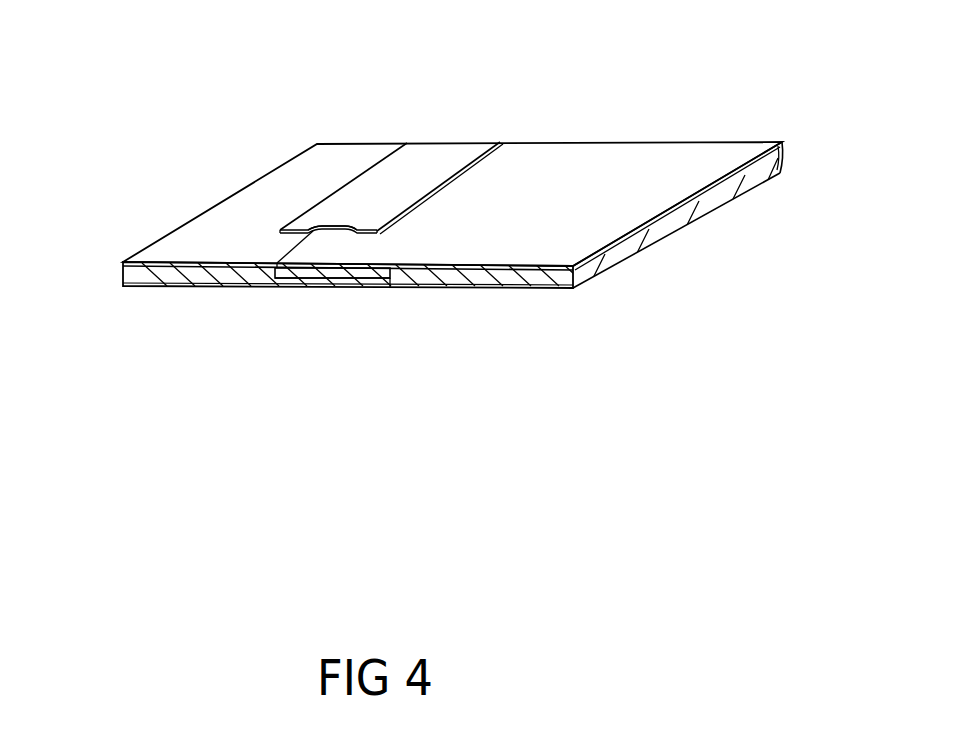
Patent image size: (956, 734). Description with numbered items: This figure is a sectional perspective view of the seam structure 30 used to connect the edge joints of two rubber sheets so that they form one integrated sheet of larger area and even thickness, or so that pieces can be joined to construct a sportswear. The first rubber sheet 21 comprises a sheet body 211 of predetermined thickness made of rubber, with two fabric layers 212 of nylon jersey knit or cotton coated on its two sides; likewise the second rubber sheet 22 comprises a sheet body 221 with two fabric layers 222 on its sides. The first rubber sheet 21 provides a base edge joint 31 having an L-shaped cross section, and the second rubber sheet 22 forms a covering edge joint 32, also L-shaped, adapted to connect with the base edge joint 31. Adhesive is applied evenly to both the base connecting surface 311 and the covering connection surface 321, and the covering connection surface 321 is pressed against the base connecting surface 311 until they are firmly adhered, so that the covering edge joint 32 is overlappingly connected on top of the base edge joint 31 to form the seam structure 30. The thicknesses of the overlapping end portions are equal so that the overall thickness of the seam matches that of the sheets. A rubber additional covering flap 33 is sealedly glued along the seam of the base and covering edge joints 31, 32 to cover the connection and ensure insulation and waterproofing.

The first rubber sheet 21 is at (175, 291).
The sheet body 211 is at (133, 272).
The fabric layers 212 is at (148, 262).
The second rubber sheet 22 is at (645, 257).
The sheet body 221 is at (783, 158).
The fabric layers 222 is at (775, 143).
The seam structure 30 is at (598, 73).
The additional covering flap 33 is at (463, 145).
The covering edge joint 32 is at (405, 231).
The covering connection surface 321 is at (387, 263).
The base edge joint 31 is at (390, 290).
The base connecting surface 311 is at (308, 280).